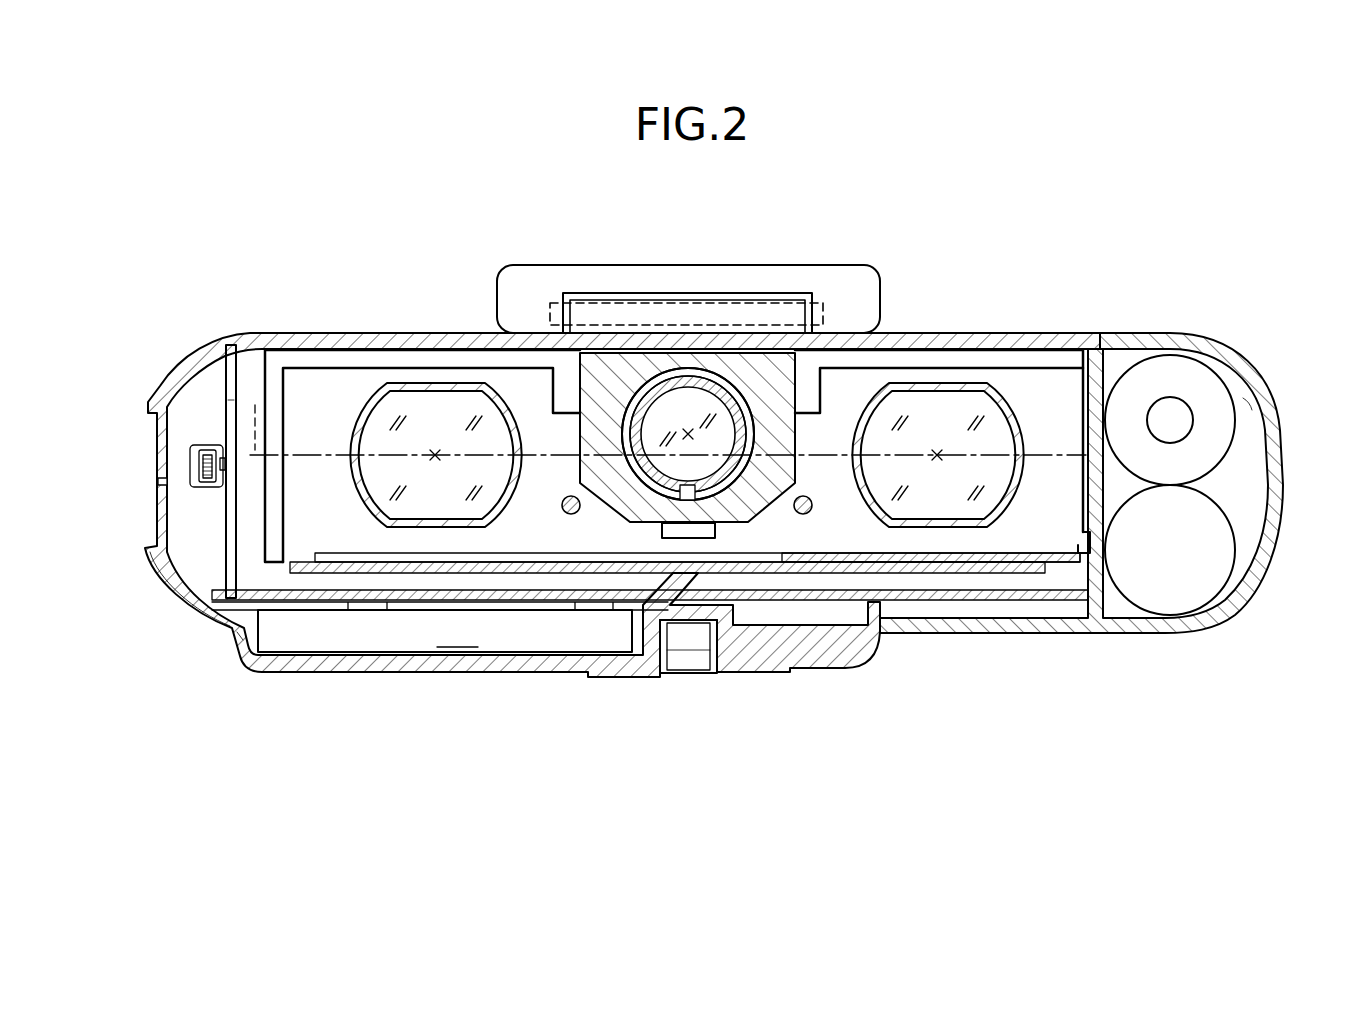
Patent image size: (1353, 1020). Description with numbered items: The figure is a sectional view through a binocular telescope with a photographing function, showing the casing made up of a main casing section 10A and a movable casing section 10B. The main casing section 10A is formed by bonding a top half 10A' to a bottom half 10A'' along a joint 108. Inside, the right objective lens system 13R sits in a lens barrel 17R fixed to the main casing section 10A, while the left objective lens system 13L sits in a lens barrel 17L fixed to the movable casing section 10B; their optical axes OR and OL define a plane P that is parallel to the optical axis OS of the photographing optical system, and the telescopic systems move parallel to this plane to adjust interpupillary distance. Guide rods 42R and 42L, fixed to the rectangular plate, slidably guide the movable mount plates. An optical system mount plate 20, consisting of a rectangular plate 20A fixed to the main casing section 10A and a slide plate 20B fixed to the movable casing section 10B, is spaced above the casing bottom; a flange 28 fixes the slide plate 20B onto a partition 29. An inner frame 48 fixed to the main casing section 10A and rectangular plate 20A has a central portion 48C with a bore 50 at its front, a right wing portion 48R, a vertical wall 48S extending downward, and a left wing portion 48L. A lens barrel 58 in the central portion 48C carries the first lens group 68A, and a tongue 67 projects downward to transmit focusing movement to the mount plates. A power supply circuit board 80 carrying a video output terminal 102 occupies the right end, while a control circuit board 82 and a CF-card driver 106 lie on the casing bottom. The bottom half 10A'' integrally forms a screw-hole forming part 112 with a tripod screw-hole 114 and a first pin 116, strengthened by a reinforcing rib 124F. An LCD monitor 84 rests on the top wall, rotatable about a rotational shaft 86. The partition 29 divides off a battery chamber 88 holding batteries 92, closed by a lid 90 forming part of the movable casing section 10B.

The main casing section 10A is at (609, 480).
The top half 10A' is at (247, 432).
The bottom half 10A'' is at (155, 608).
The movable casing section 10B is at (1251, 360).
The power supply circuit board 80 is at (226, 398).
The video output terminal 102 is at (192, 460).
The joint 108 is at (165, 485).
The vertical wall 48S is at (237, 632).
The flange 28 is at (1060, 603).
The rectangular plate 20A is at (333, 602).
The CF-card driver 106 is at (445, 631).
The control circuit board 82 is at (508, 600).
The screw-hole forming part 112 is at (652, 612).
The screw-hole 114 is at (672, 652).
The first pin 116 is at (727, 625).
The reinforcing rib 124F is at (797, 620).
The lid 90 is at (1217, 556).
The batteries 92 is at (1220, 604).
The battery chamber 88 is at (1245, 400).
The partition 29 is at (1100, 360).
The right wing portion 48R is at (352, 358).
The left wing portion 48L is at (1060, 358).
The central portion 48C is at (568, 425).
The inner frame 48 is at (847, 380).
The lens barrel 17R is at (348, 428).
The lens barrel 17L is at (1024, 420).
The objective lens system 13R is at (418, 407).
The objective lens system 13L is at (925, 405).
The optical axis OR is at (436, 452).
The optical axis OL is at (938, 452).
The optical axis OS is at (688, 432).
The plane P is at (252, 416).
The optical system mount plate 20 is at (357, 547).
The slide plate 20B is at (1068, 552).
The bore 50 is at (640, 492).
The lens barrel 58 is at (720, 478).
The first lens group 68A is at (650, 428).
The tongue 67 is at (718, 530).
The guide rod 42R is at (562, 513).
The guide rod 42L is at (812, 513).
The LCD monitor 84 is at (690, 255).
The rotational shaft 86 is at (823, 315).